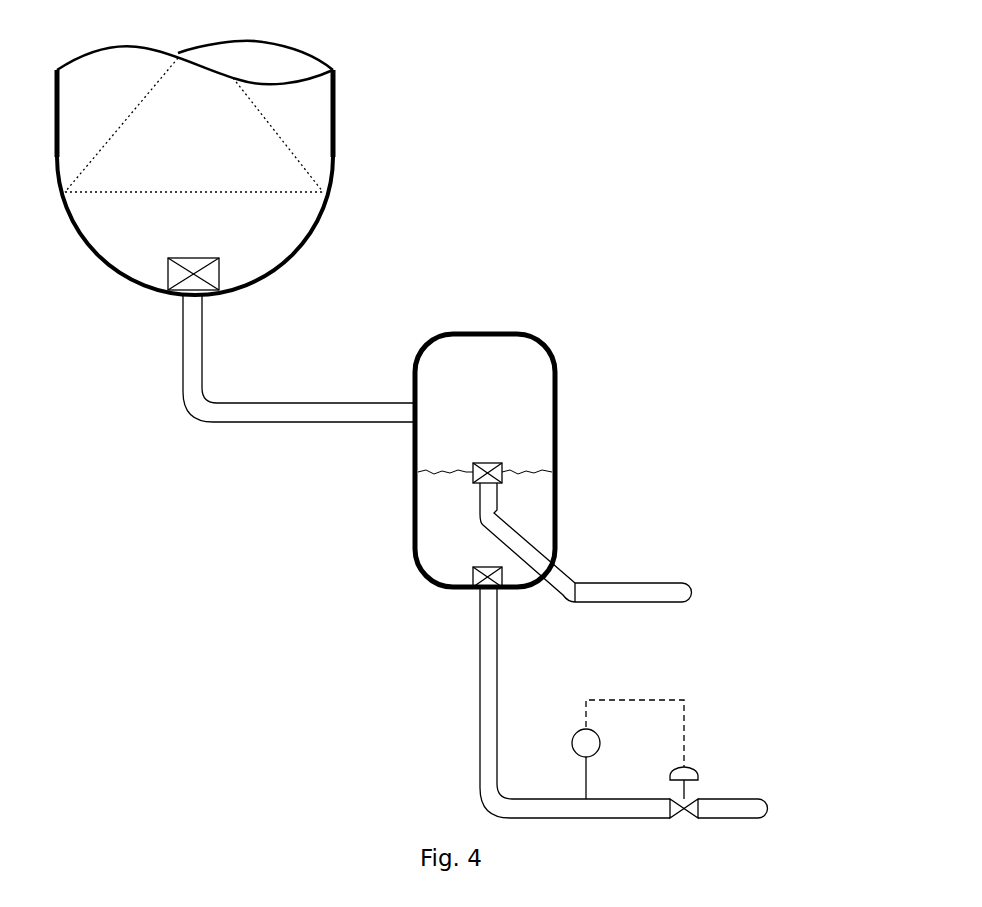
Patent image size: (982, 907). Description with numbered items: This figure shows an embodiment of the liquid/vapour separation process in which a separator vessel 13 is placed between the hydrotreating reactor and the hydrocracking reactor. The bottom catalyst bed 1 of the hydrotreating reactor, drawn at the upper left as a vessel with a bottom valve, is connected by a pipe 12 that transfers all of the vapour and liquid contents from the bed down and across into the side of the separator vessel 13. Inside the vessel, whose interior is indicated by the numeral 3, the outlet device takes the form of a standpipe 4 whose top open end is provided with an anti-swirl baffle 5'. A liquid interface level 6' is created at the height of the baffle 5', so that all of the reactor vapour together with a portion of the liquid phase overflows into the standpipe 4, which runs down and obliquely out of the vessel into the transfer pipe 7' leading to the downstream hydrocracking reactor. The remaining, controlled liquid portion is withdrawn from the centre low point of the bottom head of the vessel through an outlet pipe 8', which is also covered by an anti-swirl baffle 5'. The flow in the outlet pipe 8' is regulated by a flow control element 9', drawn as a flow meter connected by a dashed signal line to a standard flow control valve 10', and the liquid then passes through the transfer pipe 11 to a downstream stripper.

The bottom catalyst bed 1 is at (207, 128).
The pipe 12 is at (183, 382).
The separator vessel 13 is at (488, 332).
The tank interior / liquid 3 is at (502, 410).
The liquid interface level 6' is at (565, 444).
The anti-swirl baffle 5' is at (548, 531).
The standpipe 4 is at (540, 547).
The transfer pipe 7' is at (659, 596).
The outlet pipe 8' is at (575, 702).
The flow control element 9' is at (594, 749).
The flow control valve 10' is at (717, 774).
The transfer pipe 11 is at (770, 800).